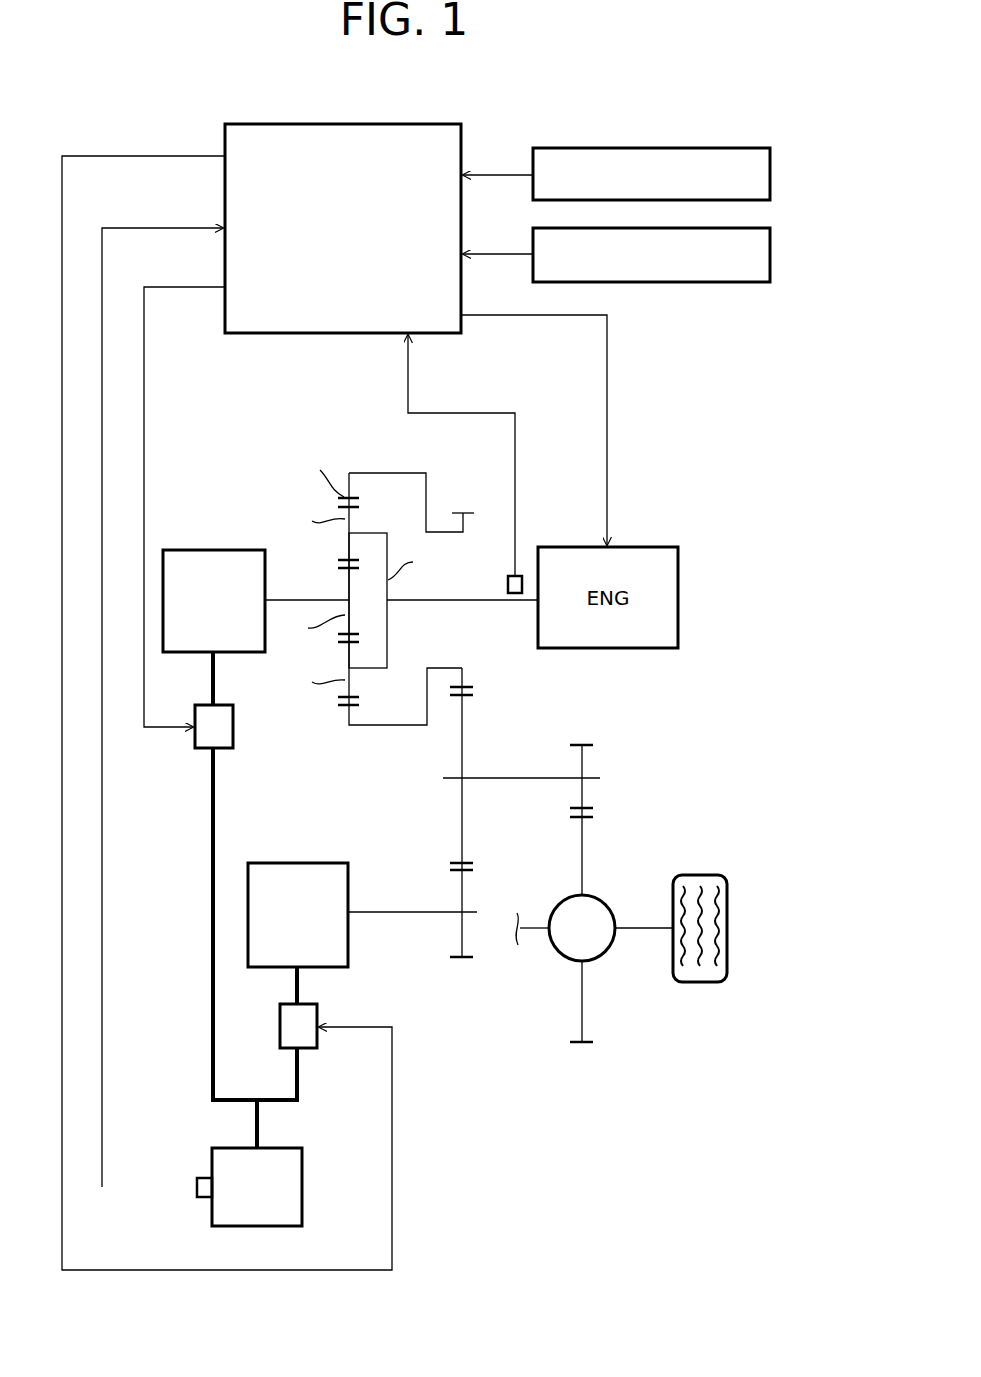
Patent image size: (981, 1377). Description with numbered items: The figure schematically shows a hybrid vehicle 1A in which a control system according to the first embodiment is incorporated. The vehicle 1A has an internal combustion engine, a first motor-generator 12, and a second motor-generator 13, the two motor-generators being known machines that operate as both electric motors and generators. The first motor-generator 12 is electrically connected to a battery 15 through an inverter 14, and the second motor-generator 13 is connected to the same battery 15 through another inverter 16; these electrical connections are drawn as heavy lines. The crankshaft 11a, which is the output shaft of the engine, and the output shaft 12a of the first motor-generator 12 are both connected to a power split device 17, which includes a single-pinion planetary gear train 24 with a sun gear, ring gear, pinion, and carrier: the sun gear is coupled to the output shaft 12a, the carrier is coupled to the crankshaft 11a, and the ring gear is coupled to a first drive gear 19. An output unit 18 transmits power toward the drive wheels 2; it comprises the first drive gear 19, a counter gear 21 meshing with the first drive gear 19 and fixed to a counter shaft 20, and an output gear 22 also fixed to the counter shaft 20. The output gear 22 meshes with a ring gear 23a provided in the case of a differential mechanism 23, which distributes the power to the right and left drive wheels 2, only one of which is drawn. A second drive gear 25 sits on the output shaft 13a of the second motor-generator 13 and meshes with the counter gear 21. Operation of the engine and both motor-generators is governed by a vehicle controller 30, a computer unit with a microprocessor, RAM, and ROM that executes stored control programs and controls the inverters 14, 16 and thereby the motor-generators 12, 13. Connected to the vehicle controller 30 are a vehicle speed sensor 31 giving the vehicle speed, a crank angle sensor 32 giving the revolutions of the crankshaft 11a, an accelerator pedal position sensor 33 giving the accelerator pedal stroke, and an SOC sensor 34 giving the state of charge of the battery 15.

The hybrid vehicle 1A is at (586, 1147).
The drive wheels 2 is at (709, 982).
The crankshaft 11a is at (519, 603).
The first motor-generator 12 is at (214, 550).
The output shaft of the first MG 12a is at (293, 600).
The second motor-generator 13 is at (288, 862).
The output shaft of the second MG 13a is at (394, 912).
The inverter 14 is at (203, 748).
The battery 15 is at (302, 1192).
The inverter 16 is at (310, 1048).
The power split device 17 is at (370, 445).
The output unit 18 is at (664, 785).
The first drive gear 19 is at (466, 683).
The counter shaft 20 is at (518, 778).
The counter gear 21 is at (464, 812).
The output gear 22 is at (585, 760).
The differential mechanism 23 is at (564, 958).
The ring gear 23a is at (584, 852).
The planetary gear train 24 is at (349, 738).
The second drive gear 25 is at (458, 960).
The vehicle controller 30 is at (279, 333).
The vehicle speed sensor 31 is at (683, 148).
The crank angle sensor 32 is at (508, 586).
The accelerator pedal position sensor 33 is at (730, 282).
The SOC sensor 34 is at (205, 1178).